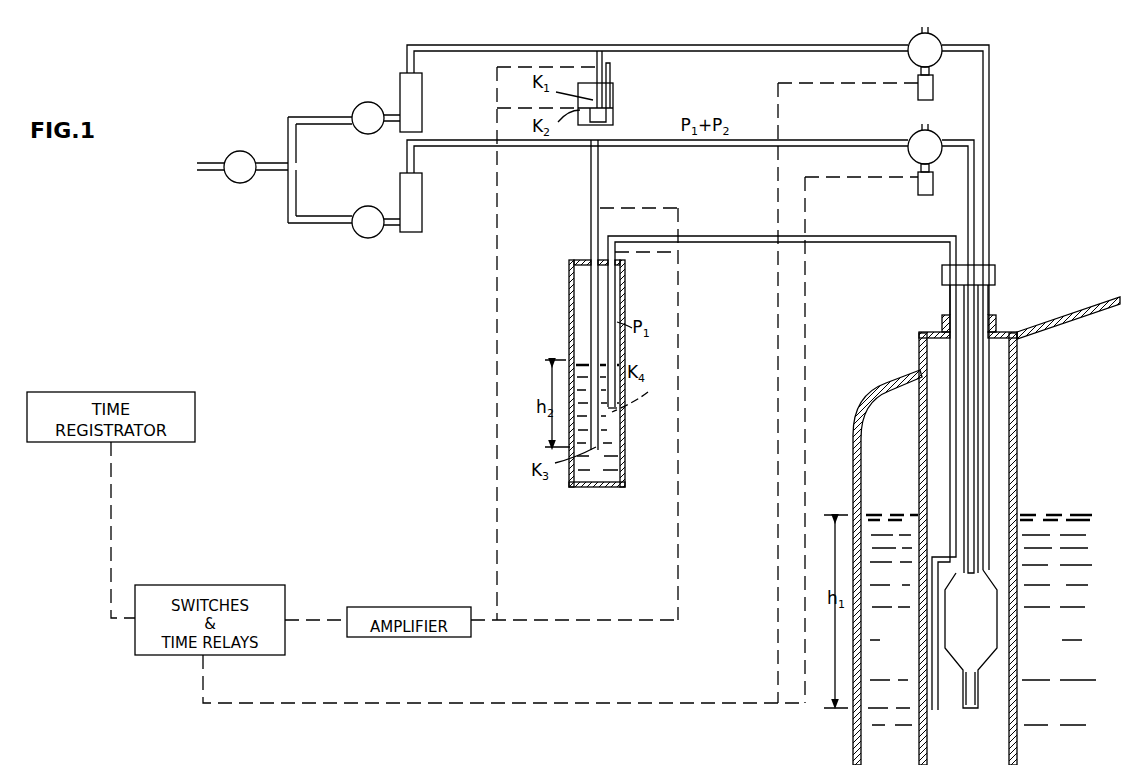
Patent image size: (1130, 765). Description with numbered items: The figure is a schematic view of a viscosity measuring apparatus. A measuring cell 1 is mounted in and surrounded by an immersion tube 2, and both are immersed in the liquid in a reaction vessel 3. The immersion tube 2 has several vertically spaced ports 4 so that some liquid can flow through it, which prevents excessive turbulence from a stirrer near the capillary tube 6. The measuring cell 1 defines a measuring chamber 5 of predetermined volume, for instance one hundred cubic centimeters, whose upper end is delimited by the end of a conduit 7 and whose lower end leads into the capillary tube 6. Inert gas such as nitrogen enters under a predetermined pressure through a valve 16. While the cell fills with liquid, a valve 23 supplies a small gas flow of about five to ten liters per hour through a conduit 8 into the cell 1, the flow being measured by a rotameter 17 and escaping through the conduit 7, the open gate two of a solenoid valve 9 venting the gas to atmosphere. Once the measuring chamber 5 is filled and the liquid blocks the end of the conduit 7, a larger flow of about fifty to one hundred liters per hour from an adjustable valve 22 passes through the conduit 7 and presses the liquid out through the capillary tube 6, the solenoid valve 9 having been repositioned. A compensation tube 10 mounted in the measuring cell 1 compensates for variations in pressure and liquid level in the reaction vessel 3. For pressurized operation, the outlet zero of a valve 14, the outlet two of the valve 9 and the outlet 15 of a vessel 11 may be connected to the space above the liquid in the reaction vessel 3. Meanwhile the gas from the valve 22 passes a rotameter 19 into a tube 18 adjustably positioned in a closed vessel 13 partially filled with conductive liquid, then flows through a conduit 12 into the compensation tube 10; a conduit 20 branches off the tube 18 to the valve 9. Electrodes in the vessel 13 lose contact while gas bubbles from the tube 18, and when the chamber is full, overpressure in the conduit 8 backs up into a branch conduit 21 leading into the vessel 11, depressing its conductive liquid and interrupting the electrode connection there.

The measuring cell 1 is at (985, 568).
The immersion tube 2 is at (1000, 657).
The reaction vessel 3 is at (1068, 414).
The vertically spaced ports 4 is at (1013, 432).
The measuring chamber 5 is at (961, 628).
The capillary tube 6 is at (982, 703).
The conduit 7 is at (975, 396).
The conduit 8 is at (989, 208).
The solenoid valve 9 is at (928, 195).
The compensation tube 10 is at (950, 479).
The vessel 11 is at (613, 103).
The conduit 12 is at (747, 243).
The vessel 13 is at (625, 452).
The valve 14 is at (933, 93).
The outlet 15 is at (623, 88).
The valve 16 is at (238, 183).
The rotameter 17 is at (422, 112).
The tube 18 is at (590, 190).
The rotameter 19 is at (422, 202).
The conduit 20 is at (718, 147).
The branch conduit 21 is at (610, 62).
The adjustable valve 22 is at (370, 238).
The valve 23 is at (370, 134).